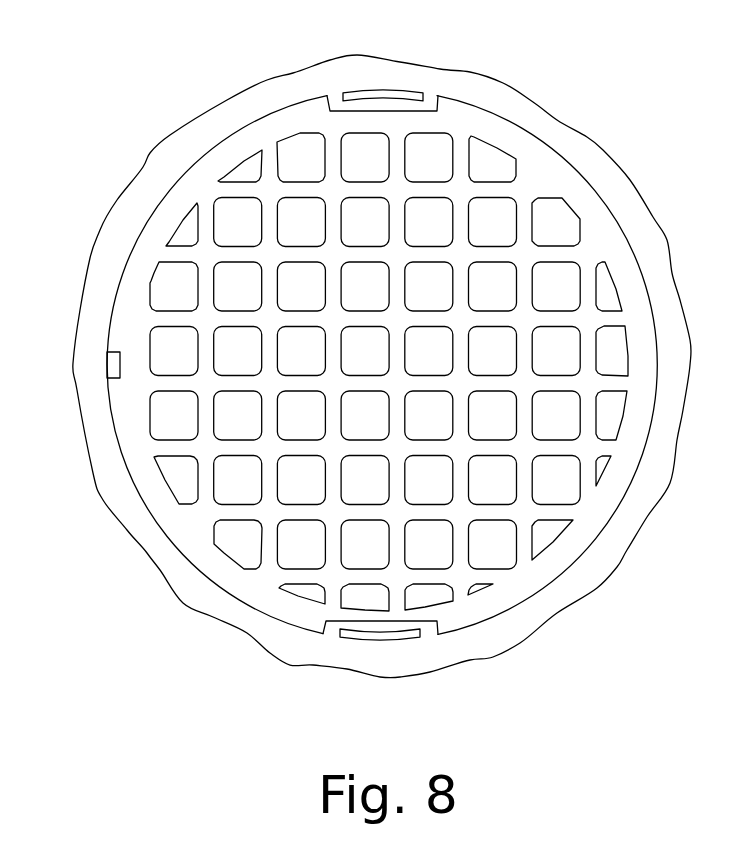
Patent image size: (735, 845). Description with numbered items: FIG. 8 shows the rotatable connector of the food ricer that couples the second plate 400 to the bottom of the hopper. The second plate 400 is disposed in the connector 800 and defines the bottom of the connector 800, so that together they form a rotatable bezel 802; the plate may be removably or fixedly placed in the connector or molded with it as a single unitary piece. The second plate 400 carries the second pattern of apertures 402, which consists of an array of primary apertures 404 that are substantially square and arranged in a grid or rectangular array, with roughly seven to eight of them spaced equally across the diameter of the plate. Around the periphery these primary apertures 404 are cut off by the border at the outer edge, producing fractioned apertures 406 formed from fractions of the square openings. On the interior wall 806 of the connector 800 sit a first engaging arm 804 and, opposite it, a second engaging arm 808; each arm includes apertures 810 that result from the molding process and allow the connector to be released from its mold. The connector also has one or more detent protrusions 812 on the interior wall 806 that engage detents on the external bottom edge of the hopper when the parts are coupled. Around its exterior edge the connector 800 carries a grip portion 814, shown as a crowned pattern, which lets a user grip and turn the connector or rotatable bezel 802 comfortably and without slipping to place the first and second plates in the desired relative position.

The connector 800 is at (373, 371).
The rotatable bezel 802 is at (533, 101).
The first engaging arm 804 is at (425, 633).
The interior wall 806 is at (247, 617).
The second engaging arm 808 is at (340, 108).
The apertures 810 is at (380, 92).
The detent protrusions 812 is at (113, 362).
The grip portion 814 is at (647, 518).
The second plate 400 is at (190, 538).
The second pattern of apertures 402 is at (185, 230).
The primary apertures 404 is at (162, 422).
The fractioned apertures 406 is at (182, 482).